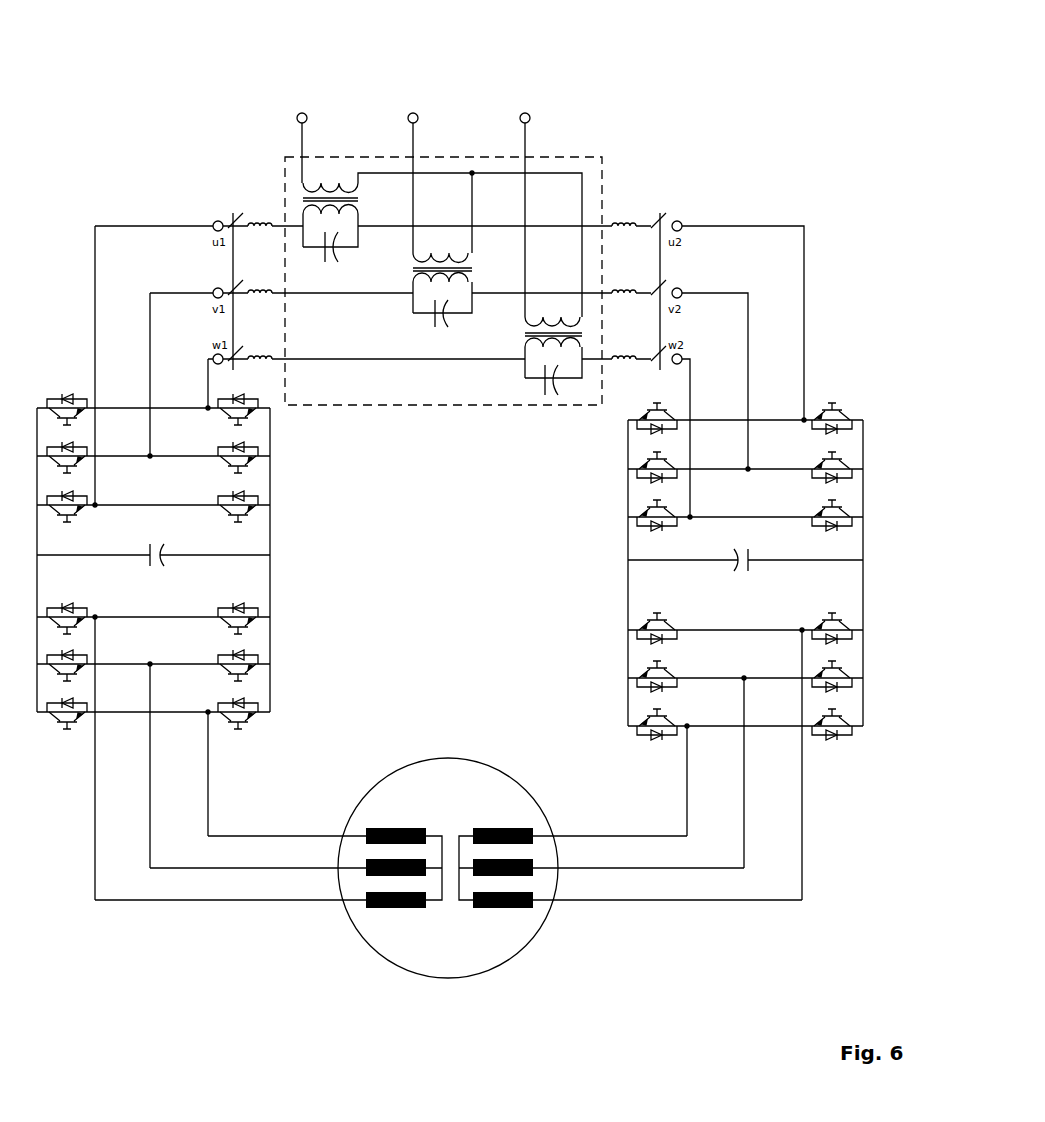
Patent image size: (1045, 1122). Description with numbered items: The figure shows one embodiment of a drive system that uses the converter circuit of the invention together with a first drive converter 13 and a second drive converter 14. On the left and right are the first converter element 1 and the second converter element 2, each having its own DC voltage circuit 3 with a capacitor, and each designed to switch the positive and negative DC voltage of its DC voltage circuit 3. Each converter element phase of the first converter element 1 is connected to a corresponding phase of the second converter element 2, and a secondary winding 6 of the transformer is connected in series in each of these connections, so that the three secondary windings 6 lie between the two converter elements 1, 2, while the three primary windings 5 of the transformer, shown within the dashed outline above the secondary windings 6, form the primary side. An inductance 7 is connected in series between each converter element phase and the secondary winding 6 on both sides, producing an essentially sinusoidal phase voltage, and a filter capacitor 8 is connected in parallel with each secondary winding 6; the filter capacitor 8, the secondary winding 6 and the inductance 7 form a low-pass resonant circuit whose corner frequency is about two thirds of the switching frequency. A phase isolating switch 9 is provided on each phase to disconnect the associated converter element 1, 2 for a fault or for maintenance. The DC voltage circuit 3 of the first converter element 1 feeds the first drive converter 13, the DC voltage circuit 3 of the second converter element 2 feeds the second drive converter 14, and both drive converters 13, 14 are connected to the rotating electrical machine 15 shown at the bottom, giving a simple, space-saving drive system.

The first converter element 1 is at (120, 434).
The second converter element 2 is at (779, 436).
The DC voltage circuit 3 is at (140, 575).
The transformer primary winding 5 is at (540, 320).
The secondary winding 6 is at (543, 345).
The inductance 7 is at (612, 224).
The filter capacitor 8 is at (548, 388).
The phase isolating switch 9 is at (662, 290).
The first drive converter 13 is at (125, 640).
The second drive converter 14 is at (714, 662).
The rotating electrical machine 15 is at (547, 917).